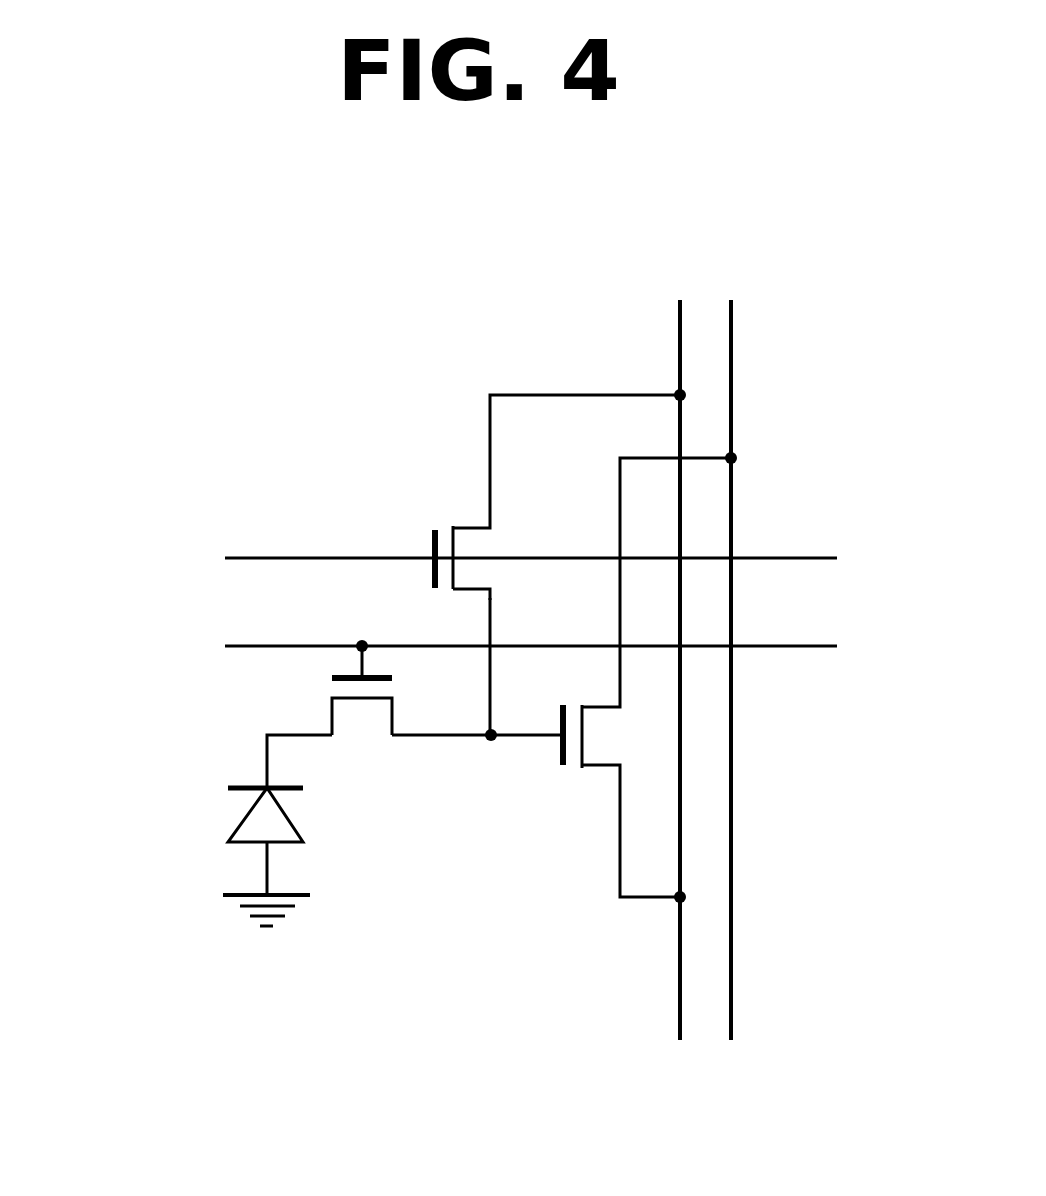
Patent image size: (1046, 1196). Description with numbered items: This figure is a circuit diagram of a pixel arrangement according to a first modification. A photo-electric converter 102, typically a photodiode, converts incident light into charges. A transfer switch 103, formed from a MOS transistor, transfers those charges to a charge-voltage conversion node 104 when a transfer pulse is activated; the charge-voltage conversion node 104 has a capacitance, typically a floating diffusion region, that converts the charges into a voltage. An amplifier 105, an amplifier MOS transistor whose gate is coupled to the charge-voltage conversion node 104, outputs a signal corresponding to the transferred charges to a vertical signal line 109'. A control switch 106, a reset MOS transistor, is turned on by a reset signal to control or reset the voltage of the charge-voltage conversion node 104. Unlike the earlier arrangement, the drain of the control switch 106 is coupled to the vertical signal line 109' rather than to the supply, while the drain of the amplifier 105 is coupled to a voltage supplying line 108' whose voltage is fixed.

The photo-electric converter 102 is at (238, 812).
The transfer switch 103 is at (360, 720).
The charge-voltage conversion node 104 is at (491, 745).
The amplifier 105 is at (578, 770).
The control switch 106 is at (447, 518).
The voltage supplying line 108' is at (762, 614).
The vertical signal line 109' is at (651, 614).